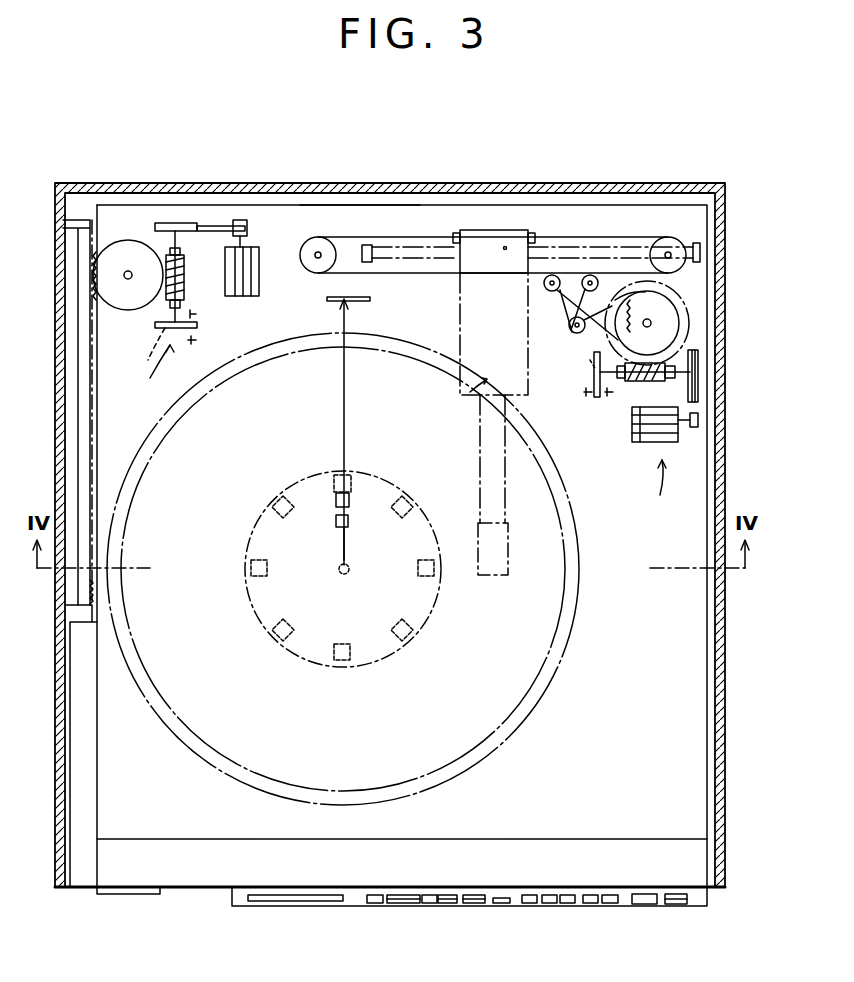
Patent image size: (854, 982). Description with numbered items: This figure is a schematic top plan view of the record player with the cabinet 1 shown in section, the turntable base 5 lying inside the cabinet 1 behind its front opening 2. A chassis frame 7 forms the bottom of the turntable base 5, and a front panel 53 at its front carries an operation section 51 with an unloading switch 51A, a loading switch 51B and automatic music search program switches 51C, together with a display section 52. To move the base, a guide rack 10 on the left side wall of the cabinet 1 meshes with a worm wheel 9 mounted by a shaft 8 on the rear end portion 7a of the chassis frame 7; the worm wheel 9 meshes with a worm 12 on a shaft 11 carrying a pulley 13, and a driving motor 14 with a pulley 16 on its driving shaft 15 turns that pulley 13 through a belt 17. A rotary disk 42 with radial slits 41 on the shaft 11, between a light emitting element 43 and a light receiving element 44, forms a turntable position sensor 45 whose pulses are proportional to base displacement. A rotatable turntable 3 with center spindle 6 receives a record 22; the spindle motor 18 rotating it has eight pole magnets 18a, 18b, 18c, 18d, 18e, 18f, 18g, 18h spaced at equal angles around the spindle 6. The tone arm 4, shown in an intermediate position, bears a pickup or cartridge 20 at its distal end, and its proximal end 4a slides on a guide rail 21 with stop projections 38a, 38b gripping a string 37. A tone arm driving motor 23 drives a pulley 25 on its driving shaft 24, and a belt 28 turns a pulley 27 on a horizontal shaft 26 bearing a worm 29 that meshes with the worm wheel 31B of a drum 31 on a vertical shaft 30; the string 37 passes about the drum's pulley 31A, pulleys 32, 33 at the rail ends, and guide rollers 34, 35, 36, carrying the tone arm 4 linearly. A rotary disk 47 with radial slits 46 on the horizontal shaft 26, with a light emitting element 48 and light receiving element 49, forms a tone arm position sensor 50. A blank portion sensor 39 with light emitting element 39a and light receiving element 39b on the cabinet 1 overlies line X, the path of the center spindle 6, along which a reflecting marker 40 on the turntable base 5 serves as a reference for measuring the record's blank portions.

The cabinet 1 is at (718, 692).
The front opening 2 is at (62, 885).
The turntable 3 is at (570, 630).
The tone arm 4 is at (460, 395).
The proximal end of tone arm 4a is at (497, 247).
The turntable base 5 is at (695, 872).
The center spindle 6 is at (338, 572).
The chassis frame 7 is at (690, 740).
The rear end portion of chassis frame 7a is at (362, 215).
The shaft 8 is at (100, 235).
The worm wheel 9 is at (128, 270).
The guide rack 10 is at (74, 230).
The shaft 11 is at (180, 240).
The worm 12 is at (184, 265).
The pulley 13 is at (165, 222).
The driving motor 14 is at (259, 276).
The driving shaft 15 is at (248, 242).
The pulley 16 is at (241, 220).
The belt 17 is at (213, 226).
The spindle motor 18 is at (368, 665).
The pole magnet 18a is at (351, 480).
The pole magnet 18b is at (410, 500).
The pole magnet 18c is at (434, 572).
The pole magnet 18d is at (410, 634).
The pole magnet 18e is at (340, 660).
The pole magnet 18f is at (278, 636).
The pole magnet 18g is at (252, 575).
The pole magnet 18h is at (278, 502).
The pickup or cartridge 20 is at (505, 558).
The guide rail 21 is at (400, 247).
The record 22 is at (535, 685).
The tone arm driving motor 23 is at (652, 438).
The driving shaft 24 is at (684, 421).
The pulley 25 is at (698, 420).
The horizontal shaft 26 is at (698, 360).
The pulley 27 is at (698, 375).
The belt 28 is at (690, 390).
The worm 29 is at (640, 385).
The vertical shaft 30 is at (662, 300).
The drum 31 is at (650, 323).
The pulley 31A is at (617, 300).
The worm wheel 31B is at (682, 345).
The pulley 32 is at (318, 237).
The pulley 33 is at (668, 250).
The guide roller 34 is at (572, 333).
The guide roller 35 is at (593, 276).
The guide roller 36 is at (551, 292).
The string 37 is at (440, 275).
The stop projection 38a is at (456, 233).
The stop projection 38b is at (531, 233).
The blank portion sensor 39 is at (349, 500).
The light emitting element 39a is at (336, 518).
The light receiving element 39b is at (340, 522).
The reflecting marker 40 is at (370, 299).
The radial slits 41 is at (144, 354).
The rotary disk 42 is at (160, 328).
The light emitting element 43 is at (200, 315).
The light receiving element 44 is at (200, 340).
The turntable position sensor 45 is at (151, 374).
The radial slits 46 is at (590, 365).
The rotary disk 47 is at (596, 397).
The light emitting element 48 is at (606, 397).
The light receiving element 49 is at (584, 393).
The tone arm position sensor 50 is at (669, 495).
The operation section 51 is at (506, 914).
The unloading switch 51A is at (690, 906).
The loading switch 51B is at (668, 908).
The automatic music search program switches 51C is at (398, 918).
The display section 52 is at (283, 902).
The front panel 53 is at (408, 928).
The line X is at (346, 388).